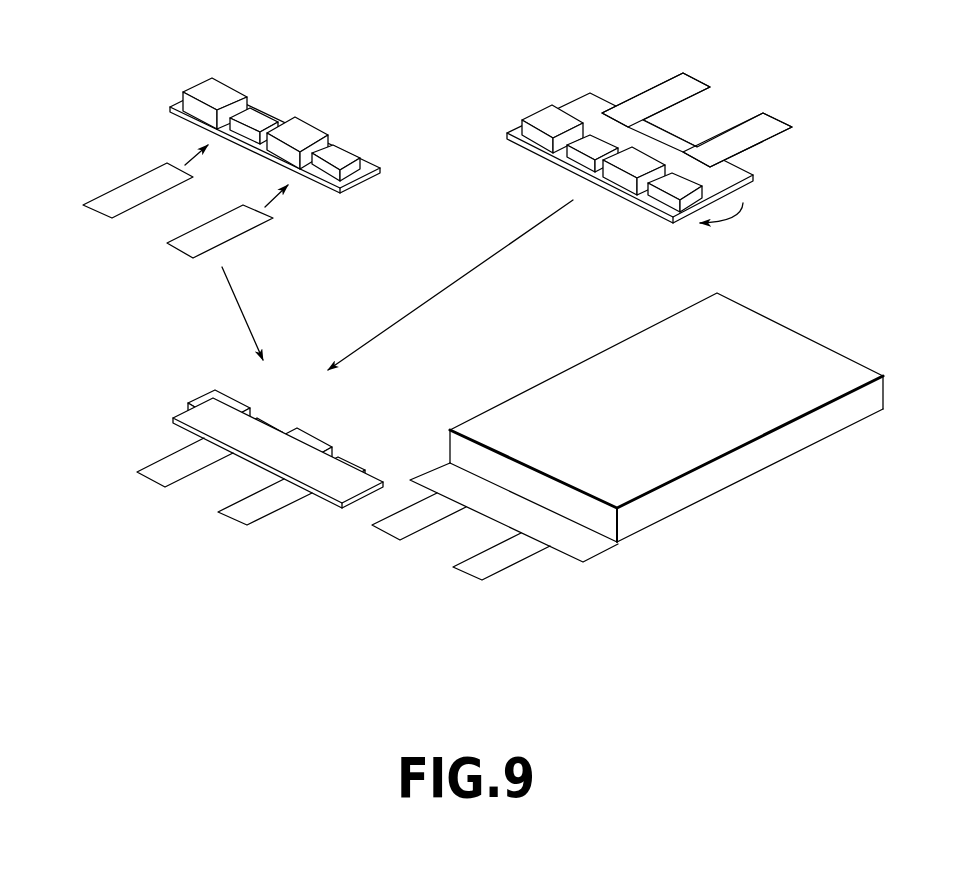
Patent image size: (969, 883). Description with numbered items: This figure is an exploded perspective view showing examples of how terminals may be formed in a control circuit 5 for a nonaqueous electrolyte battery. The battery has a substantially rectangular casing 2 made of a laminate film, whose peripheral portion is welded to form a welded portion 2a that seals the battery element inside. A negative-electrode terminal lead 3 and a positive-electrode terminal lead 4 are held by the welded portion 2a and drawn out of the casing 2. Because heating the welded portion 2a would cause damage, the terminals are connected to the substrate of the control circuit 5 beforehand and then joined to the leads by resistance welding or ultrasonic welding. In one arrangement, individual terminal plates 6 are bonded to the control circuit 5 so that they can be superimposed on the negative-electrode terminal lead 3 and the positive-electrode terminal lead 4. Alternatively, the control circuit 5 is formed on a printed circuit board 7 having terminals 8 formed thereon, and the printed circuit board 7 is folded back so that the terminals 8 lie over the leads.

The casing 2 is at (792, 342).
The welded portion 2a is at (492, 507).
The negative-electrode terminal lead 3 is at (505, 558).
The positive-electrode terminal lead 4 is at (395, 525).
The control circuit 5 is at (300, 132).
The terminal plates 6 is at (132, 193).
The printed circuit board 7 is at (670, 145).
The terminals 8 is at (663, 97).